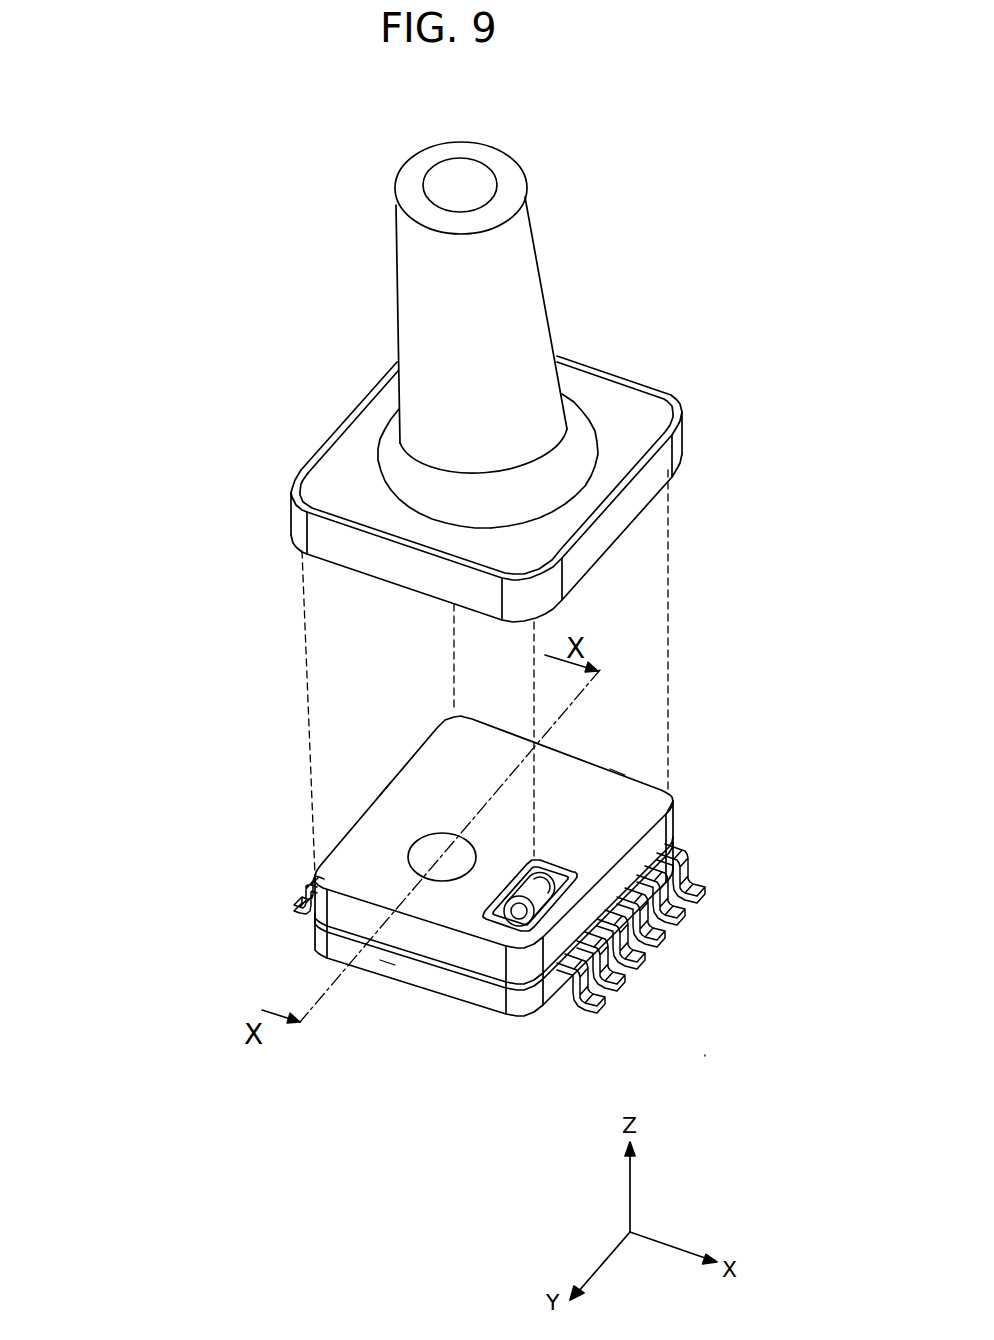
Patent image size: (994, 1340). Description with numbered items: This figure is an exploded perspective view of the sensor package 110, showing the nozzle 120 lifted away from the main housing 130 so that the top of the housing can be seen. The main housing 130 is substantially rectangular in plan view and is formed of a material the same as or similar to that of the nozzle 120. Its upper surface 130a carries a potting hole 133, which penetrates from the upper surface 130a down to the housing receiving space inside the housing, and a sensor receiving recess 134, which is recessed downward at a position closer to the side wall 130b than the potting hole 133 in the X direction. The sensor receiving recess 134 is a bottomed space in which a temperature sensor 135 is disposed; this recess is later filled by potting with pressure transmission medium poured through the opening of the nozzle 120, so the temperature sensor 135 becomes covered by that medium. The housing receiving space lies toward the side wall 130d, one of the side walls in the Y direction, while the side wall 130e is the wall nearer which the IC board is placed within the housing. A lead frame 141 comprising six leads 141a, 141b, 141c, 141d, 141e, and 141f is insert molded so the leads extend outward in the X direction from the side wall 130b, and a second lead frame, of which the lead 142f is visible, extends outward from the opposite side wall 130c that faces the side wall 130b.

The sensor package 110 is at (137, 970).
The nozzle 120 is at (396, 292).
The main housing 130 is at (488, 995).
The upper surface 130a is at (452, 918).
The side wall 130b is at (660, 830).
The side wall 130c is at (366, 807).
The side wall 130d is at (387, 957).
The side wall 130e is at (620, 772).
The potting hole 133 is at (435, 847).
The sensor receiving recess 134 is at (557, 868).
The temperature sensor 135 is at (518, 930).
The lead frame 141 is at (818, 900).
The lead 141a is at (705, 890).
The lead 141b is at (687, 915).
The lead 141c is at (665, 938).
The lead 141d is at (643, 965).
The lead 141e is at (623, 988).
The lead 141f is at (603, 1012).
The lead 142f is at (298, 908).